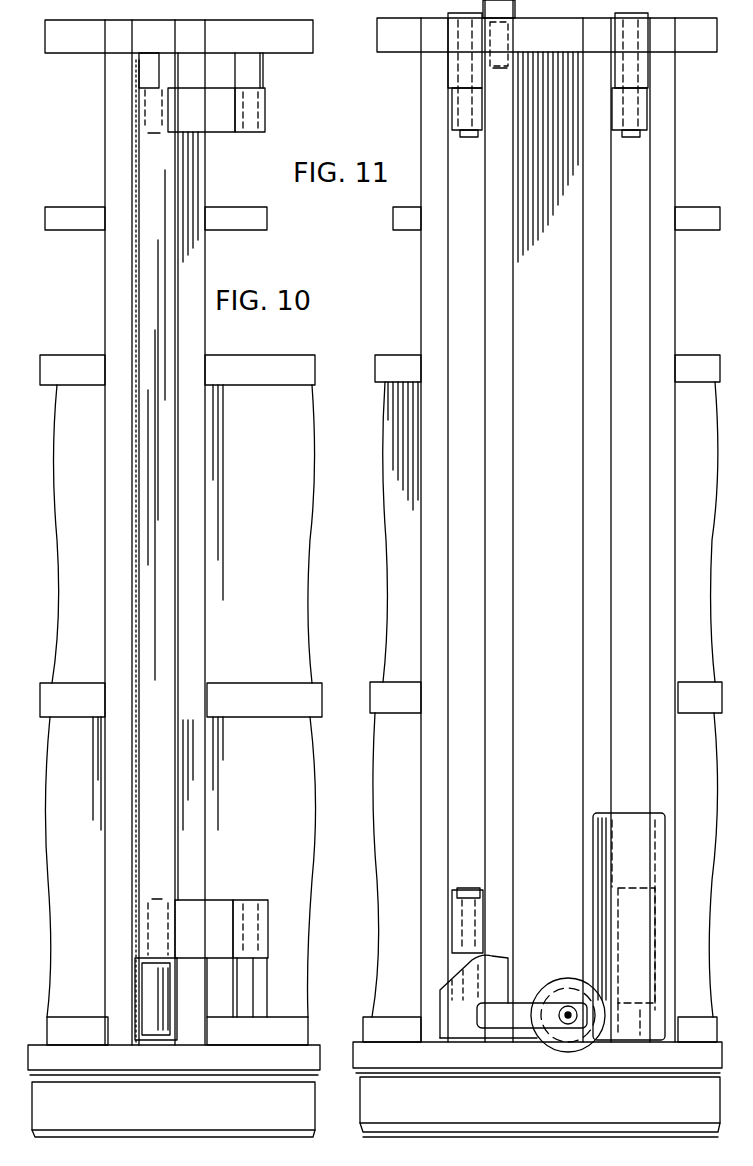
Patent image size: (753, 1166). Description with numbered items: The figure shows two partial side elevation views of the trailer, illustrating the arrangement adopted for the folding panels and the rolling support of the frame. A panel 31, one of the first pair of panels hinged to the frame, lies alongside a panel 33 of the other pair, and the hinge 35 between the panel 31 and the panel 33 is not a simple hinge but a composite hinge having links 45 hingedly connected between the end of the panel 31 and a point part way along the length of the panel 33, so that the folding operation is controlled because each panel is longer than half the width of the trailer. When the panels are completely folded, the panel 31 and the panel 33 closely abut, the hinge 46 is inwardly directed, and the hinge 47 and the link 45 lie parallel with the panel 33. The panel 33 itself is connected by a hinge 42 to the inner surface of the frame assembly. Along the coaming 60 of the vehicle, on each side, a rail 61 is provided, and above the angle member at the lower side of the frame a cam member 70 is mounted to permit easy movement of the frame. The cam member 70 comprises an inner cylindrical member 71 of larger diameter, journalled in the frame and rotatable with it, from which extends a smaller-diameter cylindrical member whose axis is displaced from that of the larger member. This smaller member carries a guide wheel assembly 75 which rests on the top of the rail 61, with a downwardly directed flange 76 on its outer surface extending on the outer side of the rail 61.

In FIG. 10, the panel 31 is at (90, 461).
In FIG. 10, the panel 33 is at (278, 498).
In FIG. 11, the panel 33 is at (418, 579).
In FIG. 10, the hinge 35 is at (128, 90).
In FIG. 11, the hinge 42 is at (440, 112).
In FIG. 10, the link 45 is at (220, 114).
In FIG. 10, the hinge 46 is at (150, 47).
In FIG. 10, the hinge 47 is at (248, 110).
In FIG. 10, the coaming 60 is at (253, 1121).
In FIG. 11, the coaming 60 is at (438, 1124).
In FIG. 10, the rail 61 is at (173, 1058).
In FIG. 11, the rail 61 is at (501, 1060).
In FIG. 11, the cam member 70 is at (582, 1055).
In FIG. 11, the inner cylindrical member 71 is at (530, 1000).
In FIG. 11, the guide wheel assembly 75 is at (568, 992).
In FIG. 11, the flange 76 is at (552, 1050).